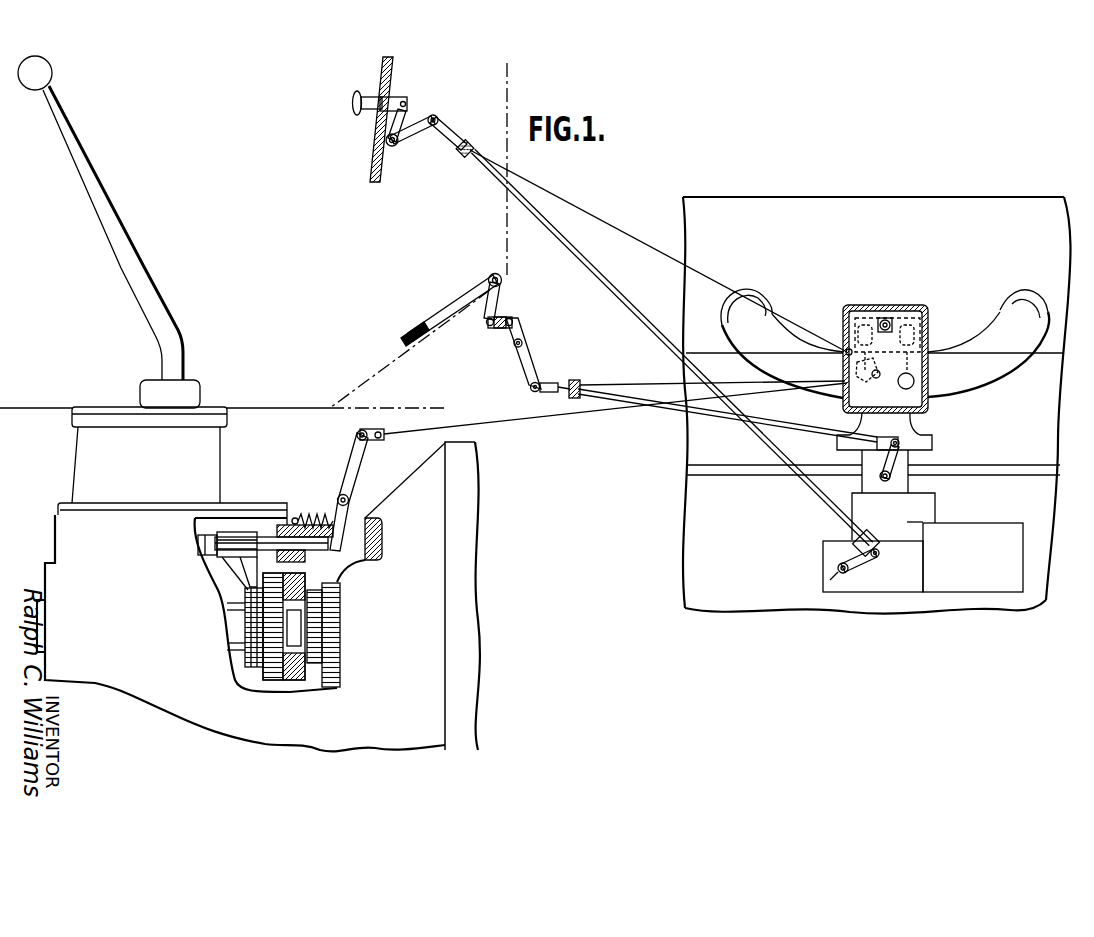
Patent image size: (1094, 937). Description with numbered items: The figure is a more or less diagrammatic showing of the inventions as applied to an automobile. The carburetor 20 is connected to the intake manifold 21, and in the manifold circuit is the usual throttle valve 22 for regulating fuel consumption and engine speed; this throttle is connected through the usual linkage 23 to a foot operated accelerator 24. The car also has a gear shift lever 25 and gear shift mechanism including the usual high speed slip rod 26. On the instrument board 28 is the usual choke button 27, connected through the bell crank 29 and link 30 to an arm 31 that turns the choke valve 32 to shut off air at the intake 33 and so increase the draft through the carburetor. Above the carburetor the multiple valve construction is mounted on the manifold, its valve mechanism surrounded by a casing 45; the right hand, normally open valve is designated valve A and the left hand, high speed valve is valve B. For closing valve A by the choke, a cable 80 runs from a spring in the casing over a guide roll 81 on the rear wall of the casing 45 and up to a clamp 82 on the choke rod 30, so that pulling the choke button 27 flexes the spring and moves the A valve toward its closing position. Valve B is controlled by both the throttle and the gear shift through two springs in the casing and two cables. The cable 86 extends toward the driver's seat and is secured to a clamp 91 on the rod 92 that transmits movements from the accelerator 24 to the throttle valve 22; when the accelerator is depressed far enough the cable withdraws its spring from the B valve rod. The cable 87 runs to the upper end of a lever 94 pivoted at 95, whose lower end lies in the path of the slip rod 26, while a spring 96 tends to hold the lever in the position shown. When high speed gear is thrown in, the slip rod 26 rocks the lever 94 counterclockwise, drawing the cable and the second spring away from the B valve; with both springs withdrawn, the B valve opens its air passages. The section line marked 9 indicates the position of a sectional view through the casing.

The carburetor 20 is at (922, 510).
The intake manifold 21 is at (965, 385).
The throttle valve 22 is at (868, 480).
The linkage 23 is at (527, 360).
The accelerator 24 is at (405, 334).
The gear shift lever 25 is at (147, 293).
The high speed slip rod 26 is at (322, 552).
The choke button 27 is at (356, 110).
The instrument board 28 is at (371, 175).
The bell crank 29 is at (410, 135).
The link 30 is at (632, 314).
The arm 31 is at (865, 566).
The choke valve 32 is at (833, 577).
The intake 33 is at (822, 565).
The casing 45 is at (866, 306).
The cable 80 is at (622, 230).
The guide roll 81 is at (846, 355).
The clamp 82 is at (463, 160).
The cable 86 is at (658, 383).
The cable 87 is at (507, 421).
The clamp 91 is at (578, 384).
The rod 92 is at (696, 416).
The lever 94 is at (350, 461).
The pivot 95 is at (350, 498).
The spring 96 is at (306, 515).
The section line 9 is at (955, 294).
The valve A is at (932, 338).
The valve B is at (852, 332).